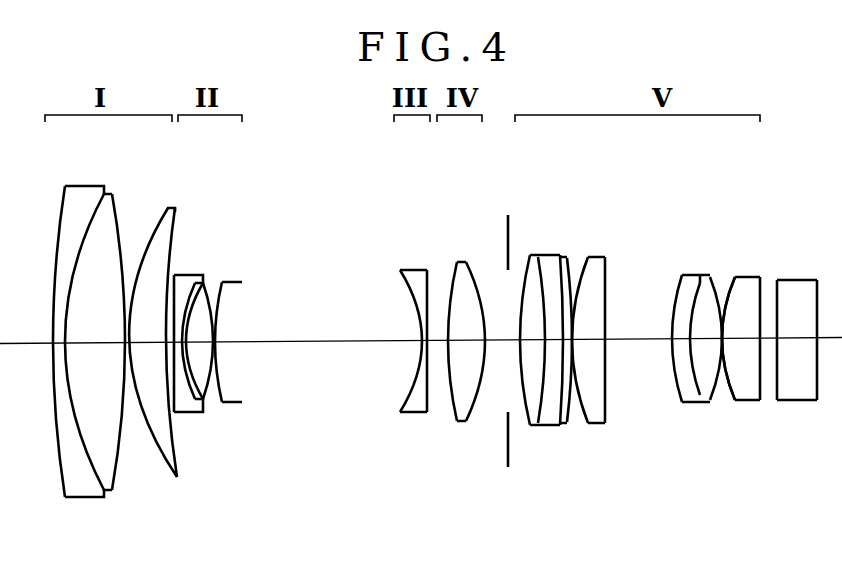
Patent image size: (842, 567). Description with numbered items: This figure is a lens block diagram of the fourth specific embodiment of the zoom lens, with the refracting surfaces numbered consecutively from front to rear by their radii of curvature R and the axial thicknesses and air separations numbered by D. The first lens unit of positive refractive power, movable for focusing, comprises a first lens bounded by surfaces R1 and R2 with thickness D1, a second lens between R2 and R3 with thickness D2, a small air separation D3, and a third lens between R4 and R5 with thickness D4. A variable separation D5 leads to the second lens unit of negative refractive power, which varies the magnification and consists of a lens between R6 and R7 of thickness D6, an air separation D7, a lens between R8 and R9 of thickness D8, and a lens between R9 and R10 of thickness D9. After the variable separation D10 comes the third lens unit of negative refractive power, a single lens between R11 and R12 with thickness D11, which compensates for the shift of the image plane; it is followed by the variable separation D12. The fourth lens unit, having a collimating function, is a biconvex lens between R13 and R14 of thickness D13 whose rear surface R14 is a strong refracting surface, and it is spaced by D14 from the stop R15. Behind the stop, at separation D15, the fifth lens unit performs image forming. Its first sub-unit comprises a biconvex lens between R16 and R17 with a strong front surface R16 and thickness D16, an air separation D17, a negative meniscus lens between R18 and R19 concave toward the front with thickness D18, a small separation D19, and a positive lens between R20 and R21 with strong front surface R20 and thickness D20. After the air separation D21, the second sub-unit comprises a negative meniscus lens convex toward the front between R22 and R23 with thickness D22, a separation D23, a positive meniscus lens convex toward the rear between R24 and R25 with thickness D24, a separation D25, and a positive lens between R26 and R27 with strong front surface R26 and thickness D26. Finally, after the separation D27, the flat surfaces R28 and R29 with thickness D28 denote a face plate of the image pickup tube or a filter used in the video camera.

The radius of curvature R1 is at (55, 212).
The radius of curvature R2 is at (83, 195).
The radius of curvature R3 is at (109, 194).
The radius of curvature R4 is at (152, 222).
The radius of curvature R5 is at (172, 210).
The radius of curvature R6 is at (178, 272).
The radius of curvature R7 is at (196, 270).
The radius of curvature R8 is at (207, 272).
The radius of curvature R9 is at (221, 275).
The radius of curvature R10 is at (243, 275).
The radius of curvature R11 is at (398, 268).
The radius of curvature R12 is at (417, 266).
The radius of curvature R13 is at (455, 262).
The radius of curvature R14 is at (466, 254).
The stop R15 is at (505, 230).
The radius of curvature R16 is at (523, 253).
The radius of curvature R17 is at (538, 255).
The radius of curvature R18 is at (552, 253).
The radius of curvature R19 is at (567, 256).
The radius of curvature R20 is at (585, 255).
The radius of curvature R21 is at (612, 256).
The radius of curvature R22 is at (676, 272).
The radius of curvature R23 is at (688, 280).
The radius of curvature R24 is at (706, 274).
The radius of curvature R25 is at (716, 275).
The radius of curvature R26 is at (737, 275).
The radius of curvature R27 is at (761, 275).
The face plate or filter surface R28 is at (774, 278).
The face plate or filter surface R29 is at (815, 278).
The axial thickness D1 is at (73, 341).
The axial thickness D2 is at (97, 341).
The air separation D3 is at (148, 341).
The axial thickness D4 is at (157, 341).
The variable air separation D5 is at (166, 341).
The axial thickness D6 is at (178, 341).
The air separation D7 is at (191, 341).
The axial thickness D8 is at (207, 341).
The axial thickness D9 is at (222, 341).
The variable air separation D10 is at (316, 341).
The axial thickness D11 is at (422, 341).
The variable air separation D12 is at (438, 341).
The axial thickness D13 is at (465, 341).
The air separation D14 is at (493, 341).
The air separation D15 is at (515, 341).
The axial thickness D16 is at (533, 341).
The air separation D17 is at (549, 341).
The axial thickness D18 is at (562, 341).
The air separation D19 is at (578, 341).
The axial thickness D20 is at (594, 341).
The air separation D21 is at (638, 341).
The axial thickness D22 is at (692, 341).
The air separation D23 is at (710, 341).
The axial thickness D24 is at (728, 341).
The air separation D25 is at (745, 341).
The axial thickness D26 is at (758, 341).
The air separation D27 is at (768, 341).
The axial thickness D28 is at (797, 341).